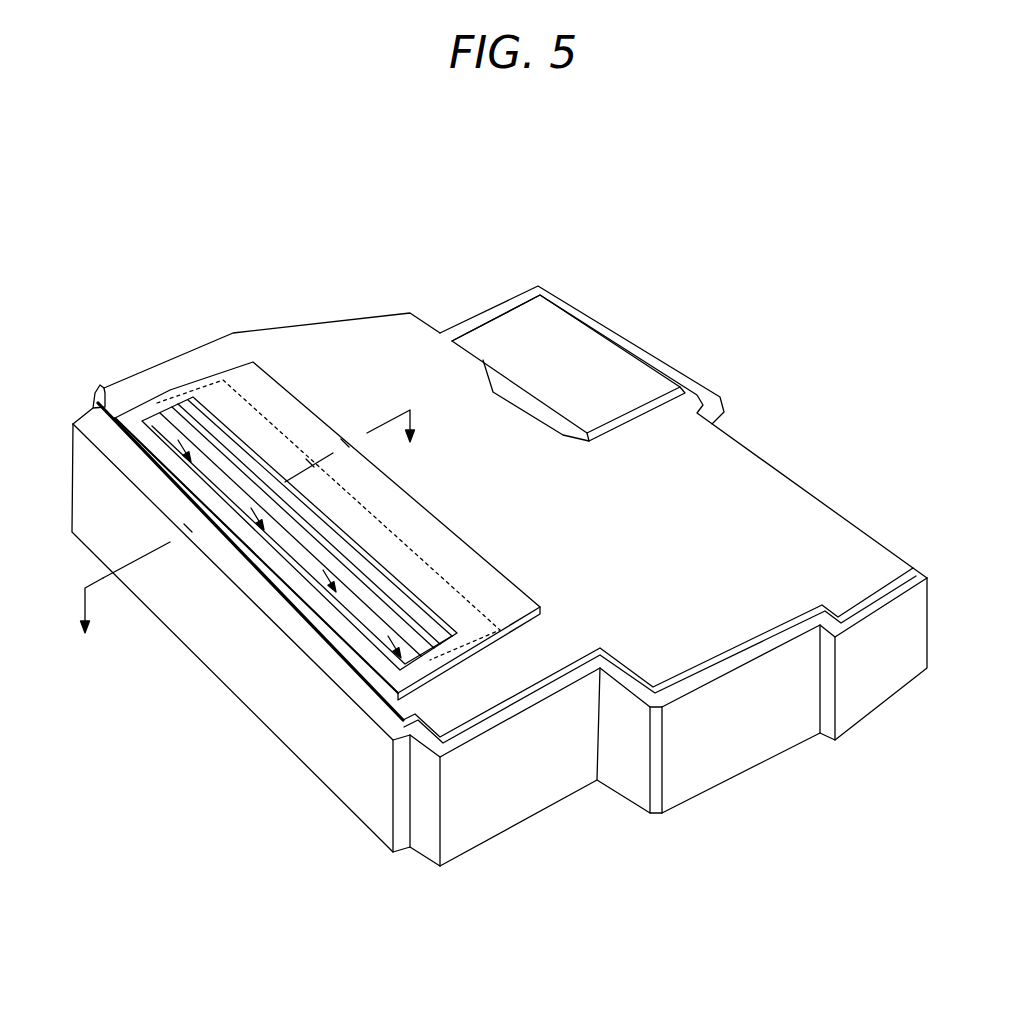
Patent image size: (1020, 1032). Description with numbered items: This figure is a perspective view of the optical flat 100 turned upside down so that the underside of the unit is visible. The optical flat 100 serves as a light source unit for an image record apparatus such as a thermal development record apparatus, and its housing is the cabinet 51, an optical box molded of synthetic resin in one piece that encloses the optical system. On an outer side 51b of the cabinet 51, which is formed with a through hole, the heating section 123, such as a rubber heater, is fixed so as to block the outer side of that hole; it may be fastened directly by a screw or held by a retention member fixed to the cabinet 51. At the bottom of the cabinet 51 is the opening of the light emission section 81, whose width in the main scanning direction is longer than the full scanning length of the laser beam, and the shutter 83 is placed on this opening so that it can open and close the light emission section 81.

The optical flat 100 is at (478, 272).
The cabinet 51 is at (790, 468).
The outer side 51b is at (333, 348).
The light emission section 81 is at (298, 570).
The shutter 83 is at (190, 414).
The heating section 123 is at (594, 326).